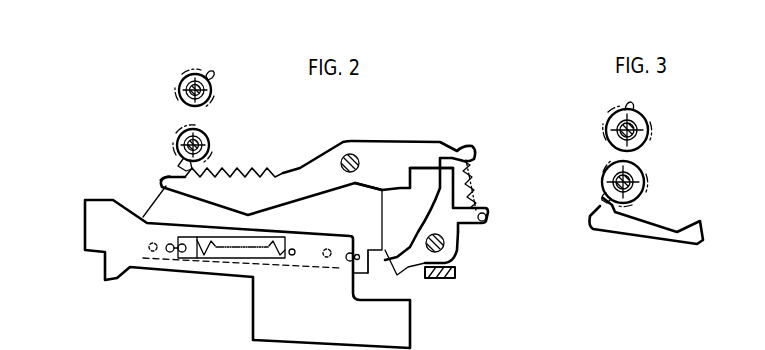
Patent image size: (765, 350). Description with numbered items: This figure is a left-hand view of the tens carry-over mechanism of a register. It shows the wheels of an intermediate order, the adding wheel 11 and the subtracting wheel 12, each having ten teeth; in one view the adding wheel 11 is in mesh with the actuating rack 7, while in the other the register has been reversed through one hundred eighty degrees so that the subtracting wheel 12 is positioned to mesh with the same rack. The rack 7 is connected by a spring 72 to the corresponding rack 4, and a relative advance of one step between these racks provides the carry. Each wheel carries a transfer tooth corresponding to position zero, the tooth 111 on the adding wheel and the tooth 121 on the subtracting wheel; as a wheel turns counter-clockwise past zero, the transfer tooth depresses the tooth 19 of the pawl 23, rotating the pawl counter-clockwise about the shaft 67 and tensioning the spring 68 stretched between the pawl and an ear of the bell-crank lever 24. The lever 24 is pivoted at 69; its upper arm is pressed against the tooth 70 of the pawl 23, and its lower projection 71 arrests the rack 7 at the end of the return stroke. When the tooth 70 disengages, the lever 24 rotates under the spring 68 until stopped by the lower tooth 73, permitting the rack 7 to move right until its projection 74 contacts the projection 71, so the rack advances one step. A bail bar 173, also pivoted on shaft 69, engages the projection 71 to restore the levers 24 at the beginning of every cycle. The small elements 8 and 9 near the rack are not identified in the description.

In FIG. 2, the rack 4 is at (263, 288).
In FIG. 2, the actuating rack 7 is at (262, 170).
In FIG. 2, the pin 8 is at (170, 252).
In FIG. 2, the hole 9 is at (155, 251).
In FIG. 2, the adding wheel 11 is at (217, 133).
In FIG. 3, the adding wheel 11 is at (650, 125).
In FIG. 2, the subtracting wheel 12 is at (218, 85).
In FIG. 3, the subtracting wheel 12 is at (647, 175).
In FIG. 2, the tooth 19 is at (168, 178).
In FIG. 2, the pawl 23 is at (316, 170).
In FIG. 3, the pawl 23 is at (653, 233).
In FIG. 2, the bell-crank lever 24 is at (460, 237).
In FIG. 2, the shaft 67 is at (355, 153).
In FIG. 2, the spring 68 is at (472, 190).
In FIG. 2, the pivot shaft 69 is at (442, 248).
In FIG. 2, the tooth 70 is at (433, 167).
In FIG. 2, the lower projection 71 is at (397, 253).
In FIG. 2, the spring 72 is at (205, 247).
In FIG. 2, the lower tooth 73 is at (382, 192).
In FIG. 2, the projection 74 is at (370, 270).
In FIG. 2, the transfer tooth 111 is at (170, 163).
In FIG. 3, the transfer tooth 111 is at (625, 105).
In FIG. 2, the transfer tooth 121 is at (211, 71).
In FIG. 3, the transfer tooth 121 is at (600, 197).
In FIG. 2, the bail bar 173 is at (448, 282).